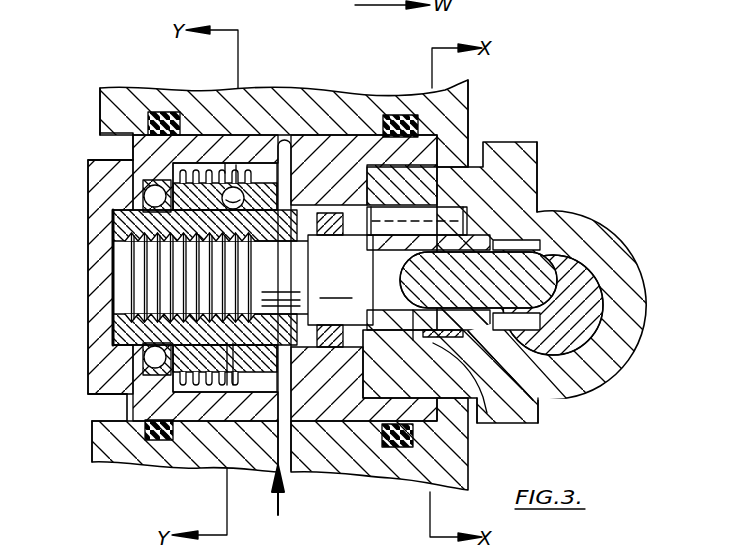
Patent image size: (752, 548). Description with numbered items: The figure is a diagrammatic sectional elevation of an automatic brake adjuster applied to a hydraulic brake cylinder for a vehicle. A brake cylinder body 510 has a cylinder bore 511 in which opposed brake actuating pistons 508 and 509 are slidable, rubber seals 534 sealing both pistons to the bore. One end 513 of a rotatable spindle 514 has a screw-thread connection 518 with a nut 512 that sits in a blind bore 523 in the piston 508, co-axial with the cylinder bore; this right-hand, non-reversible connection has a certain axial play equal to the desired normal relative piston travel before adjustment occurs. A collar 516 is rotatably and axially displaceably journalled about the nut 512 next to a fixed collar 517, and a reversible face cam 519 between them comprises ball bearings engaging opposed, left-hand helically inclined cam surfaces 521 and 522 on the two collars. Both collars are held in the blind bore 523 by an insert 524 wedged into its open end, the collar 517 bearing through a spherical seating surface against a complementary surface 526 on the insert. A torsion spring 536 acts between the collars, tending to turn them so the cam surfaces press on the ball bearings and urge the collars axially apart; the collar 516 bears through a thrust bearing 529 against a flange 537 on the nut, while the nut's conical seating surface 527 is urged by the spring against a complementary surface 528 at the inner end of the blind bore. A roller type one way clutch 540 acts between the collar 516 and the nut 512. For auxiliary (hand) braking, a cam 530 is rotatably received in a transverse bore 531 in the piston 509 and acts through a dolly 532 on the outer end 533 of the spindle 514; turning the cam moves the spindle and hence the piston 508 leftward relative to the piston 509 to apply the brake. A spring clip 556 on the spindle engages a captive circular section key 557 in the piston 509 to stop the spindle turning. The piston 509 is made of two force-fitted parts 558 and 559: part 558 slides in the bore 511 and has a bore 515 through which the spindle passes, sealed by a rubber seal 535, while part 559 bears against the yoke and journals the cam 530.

The brake actuating piston 508 is at (140, 455).
The brake actuating piston 509 is at (350, 425).
The brake cylinder body 510 is at (320, 118).
The cylinder bore 511 is at (305, 475).
The nut 512 is at (105, 130).
The one end of spindle 513 is at (175, 272).
The rotatable spindle 514 is at (340, 280).
The bore 515 is at (366, 248).
The collar 516 is at (192, 165).
The fixed collar 517 is at (267, 157).
The screw-thread connection 518 is at (120, 340).
The reversible face cam 519 is at (237, 165).
The cam surface 521 is at (226, 170).
The cam surface 522 is at (248, 160).
The blind bore 523 is at (135, 405).
The insert 524 is at (250, 472).
The complementary surface 526 is at (208, 466).
The conical seating surface 527 is at (143, 196).
The complementary surface 528 is at (145, 350).
The thrust bearing 529 is at (143, 362).
The cam 530 is at (585, 313).
The transverse bore 531 is at (568, 368).
The dolly 532 is at (565, 250).
The outer end of spindle 533 is at (482, 400).
The rubber seals 534 is at (150, 115).
The rubber seal 535 is at (322, 425).
The torsion spring 536 is at (115, 455).
The flange 537 is at (90, 158).
The roller type one way clutch 540 is at (200, 450).
The spring clip 556 is at (530, 400).
The captive circular section key 557 is at (470, 167).
The part of piston 509 558 is at (360, 135).
The part of piston 509 559 is at (540, 185).